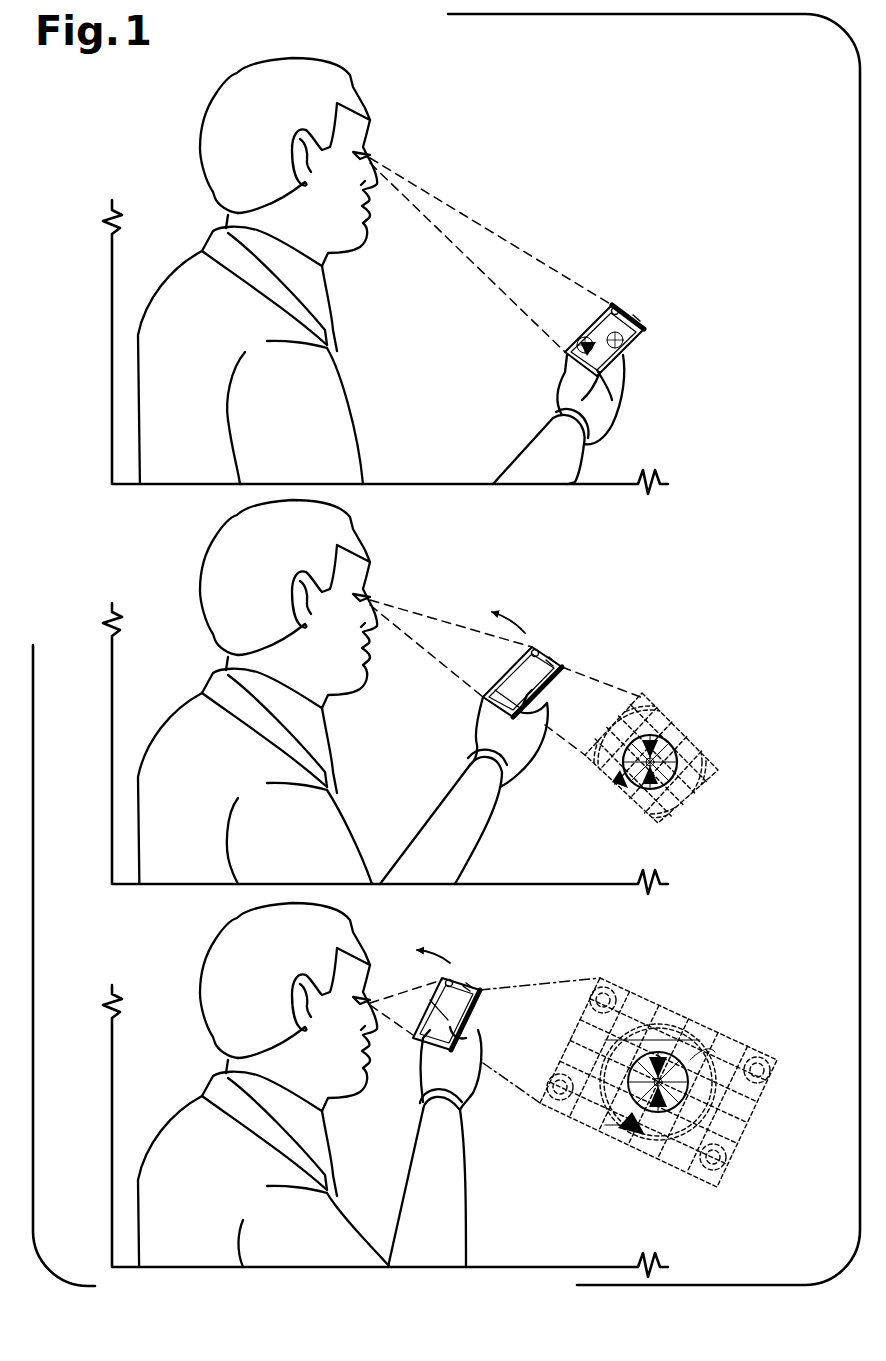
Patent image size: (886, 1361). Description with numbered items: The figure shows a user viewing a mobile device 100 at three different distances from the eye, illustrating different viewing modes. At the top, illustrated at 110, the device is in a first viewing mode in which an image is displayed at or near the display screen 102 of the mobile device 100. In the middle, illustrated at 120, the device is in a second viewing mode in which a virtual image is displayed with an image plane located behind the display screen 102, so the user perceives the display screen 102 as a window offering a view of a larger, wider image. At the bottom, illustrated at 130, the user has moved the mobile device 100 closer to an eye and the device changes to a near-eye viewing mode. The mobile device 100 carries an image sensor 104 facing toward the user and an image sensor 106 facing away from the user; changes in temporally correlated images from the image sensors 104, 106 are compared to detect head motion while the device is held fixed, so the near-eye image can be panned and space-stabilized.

The mobile device 100 is at (646, 332).
The display screen 102 is at (580, 339).
The image sensor 104 is at (616, 307).
The image sensor 106 is at (636, 319).
The first viewing mode 110 is at (632, 158).
The second viewing mode 120 is at (630, 620).
The near-eye viewing mode 130 is at (717, 968).